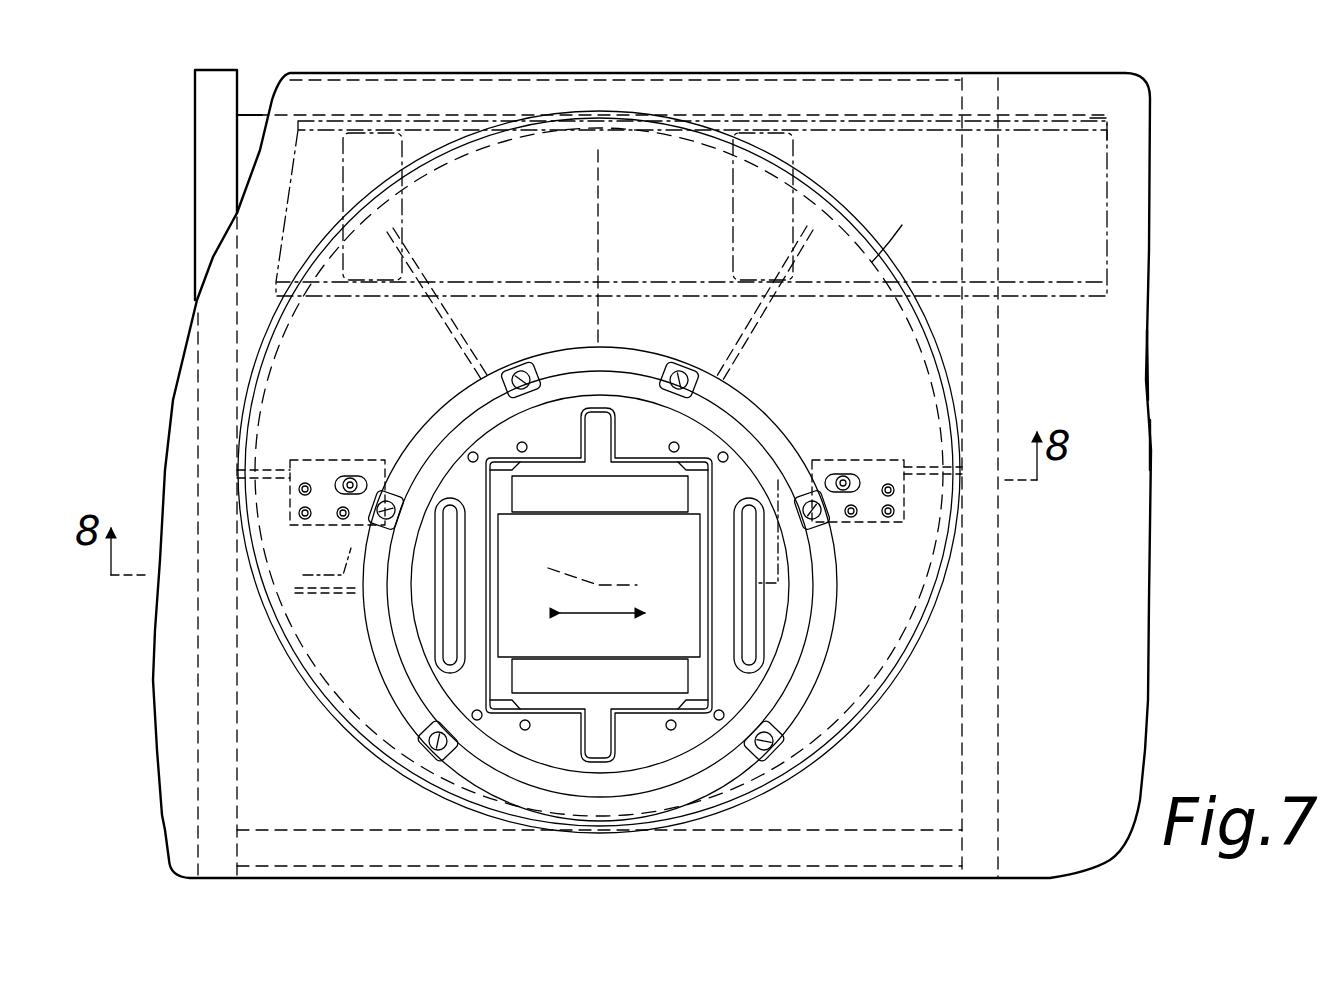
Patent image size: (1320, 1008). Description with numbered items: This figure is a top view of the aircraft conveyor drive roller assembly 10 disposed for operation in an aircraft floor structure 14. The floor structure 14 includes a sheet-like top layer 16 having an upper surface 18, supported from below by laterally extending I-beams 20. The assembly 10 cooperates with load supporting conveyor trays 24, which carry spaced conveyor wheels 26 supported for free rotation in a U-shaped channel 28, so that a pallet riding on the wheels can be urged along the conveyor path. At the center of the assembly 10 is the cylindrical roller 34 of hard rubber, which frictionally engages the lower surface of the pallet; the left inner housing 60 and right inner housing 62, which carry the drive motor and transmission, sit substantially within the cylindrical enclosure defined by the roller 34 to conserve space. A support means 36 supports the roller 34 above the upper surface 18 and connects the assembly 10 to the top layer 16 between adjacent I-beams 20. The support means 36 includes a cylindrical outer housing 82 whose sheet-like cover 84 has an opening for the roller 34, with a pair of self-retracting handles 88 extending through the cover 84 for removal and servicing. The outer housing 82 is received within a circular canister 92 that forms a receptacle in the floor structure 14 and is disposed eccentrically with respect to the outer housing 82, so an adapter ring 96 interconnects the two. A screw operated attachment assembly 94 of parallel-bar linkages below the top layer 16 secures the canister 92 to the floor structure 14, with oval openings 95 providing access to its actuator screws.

The aircraft conveyor drive roller assembly 10 is at (800, 412).
The floor structure 14 is at (1158, 100).
The top layer 16 is at (1150, 370).
The upper surface 18 is at (1142, 436).
The I-beams 20 is at (208, 773).
The conveyor trays 24 is at (1020, 116).
The conveyor wheels 26 is at (345, 158).
The U-shaped channel 28 is at (1016, 296).
The cylindrical roller 34 is at (690, 706).
The support means 36 is at (804, 712).
The left inner housing 60 is at (546, 495).
The right inner housing 62 is at (566, 688).
The cylindrical outer housing 82 is at (824, 674).
The sheet-like cover 84 is at (634, 415).
The self-retracting handles 88 is at (448, 624).
The canister 92 is at (960, 374).
The screw operated attachment assembly 94 is at (346, 478).
The oval openings 95 is at (360, 480).
The adapter ring 96 is at (862, 262).